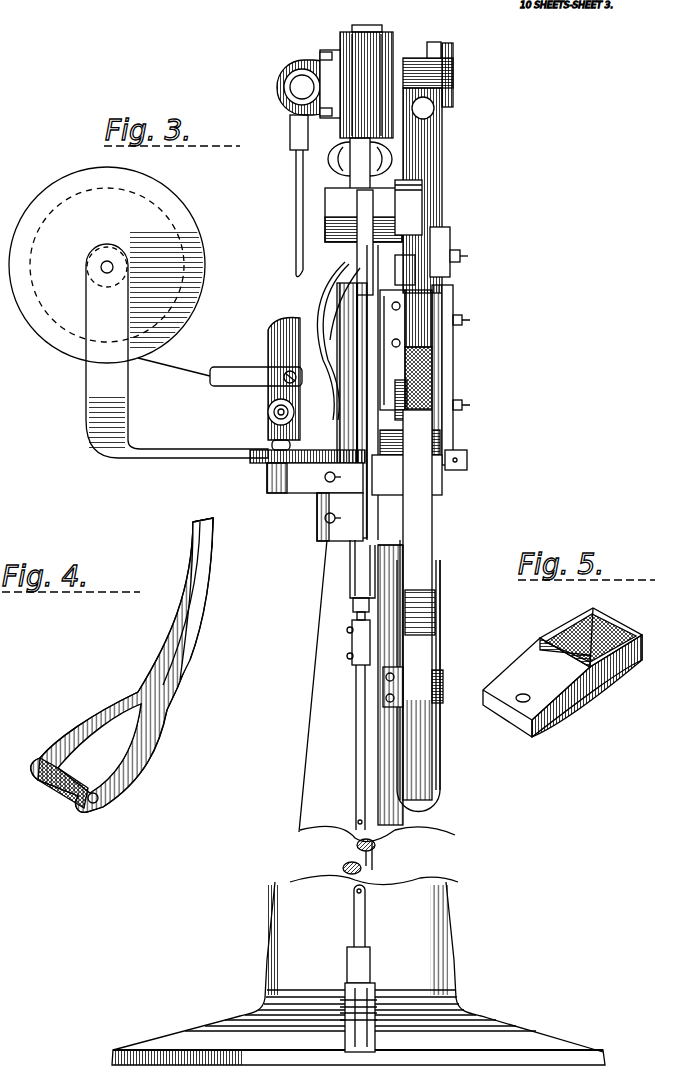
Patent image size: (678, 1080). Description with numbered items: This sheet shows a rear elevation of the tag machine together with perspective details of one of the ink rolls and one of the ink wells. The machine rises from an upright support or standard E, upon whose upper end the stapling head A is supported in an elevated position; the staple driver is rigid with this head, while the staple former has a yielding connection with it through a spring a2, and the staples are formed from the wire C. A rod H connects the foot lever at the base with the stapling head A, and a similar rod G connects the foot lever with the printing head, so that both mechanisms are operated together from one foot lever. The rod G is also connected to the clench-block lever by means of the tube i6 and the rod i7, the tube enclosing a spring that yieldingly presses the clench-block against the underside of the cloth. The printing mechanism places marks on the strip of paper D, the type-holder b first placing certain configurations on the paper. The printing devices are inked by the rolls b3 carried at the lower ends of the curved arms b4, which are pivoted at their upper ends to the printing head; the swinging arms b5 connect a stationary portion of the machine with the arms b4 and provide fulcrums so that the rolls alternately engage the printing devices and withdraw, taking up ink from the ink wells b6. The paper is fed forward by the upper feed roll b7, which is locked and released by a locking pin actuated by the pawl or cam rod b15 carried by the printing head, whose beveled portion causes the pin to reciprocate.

In FIG. 3, the stapling head A is at (376, 48).
In FIG. 3, the spring a2 is at (343, 167).
In FIG. 3, the type-holder b is at (458, 375).
In FIG. 4, the ink roll b3 is at (66, 790).
In FIG. 3, the arm b4 is at (340, 266).
In FIG. 4, the arm b4 is at (205, 570).
In FIG. 3, the swinging arm b5 is at (351, 270).
In FIG. 5, the ink well b6 is at (612, 632).
In FIG. 3, the upper feed roll b7 is at (420, 408).
In FIG. 3, the pawl or cam rod b15 is at (388, 343).
In FIG. 3, the wire C is at (192, 368).
In FIG. 3, the strip of paper D is at (420, 541).
In FIG. 3, the upright support or standard E is at (424, 887).
In FIG. 3, the rod G is at (362, 918).
In FIG. 3, the rod H is at (374, 872).
In FIG. 3, the tube i6 is at (362, 556).
In FIG. 3, the rod i7 is at (352, 623).